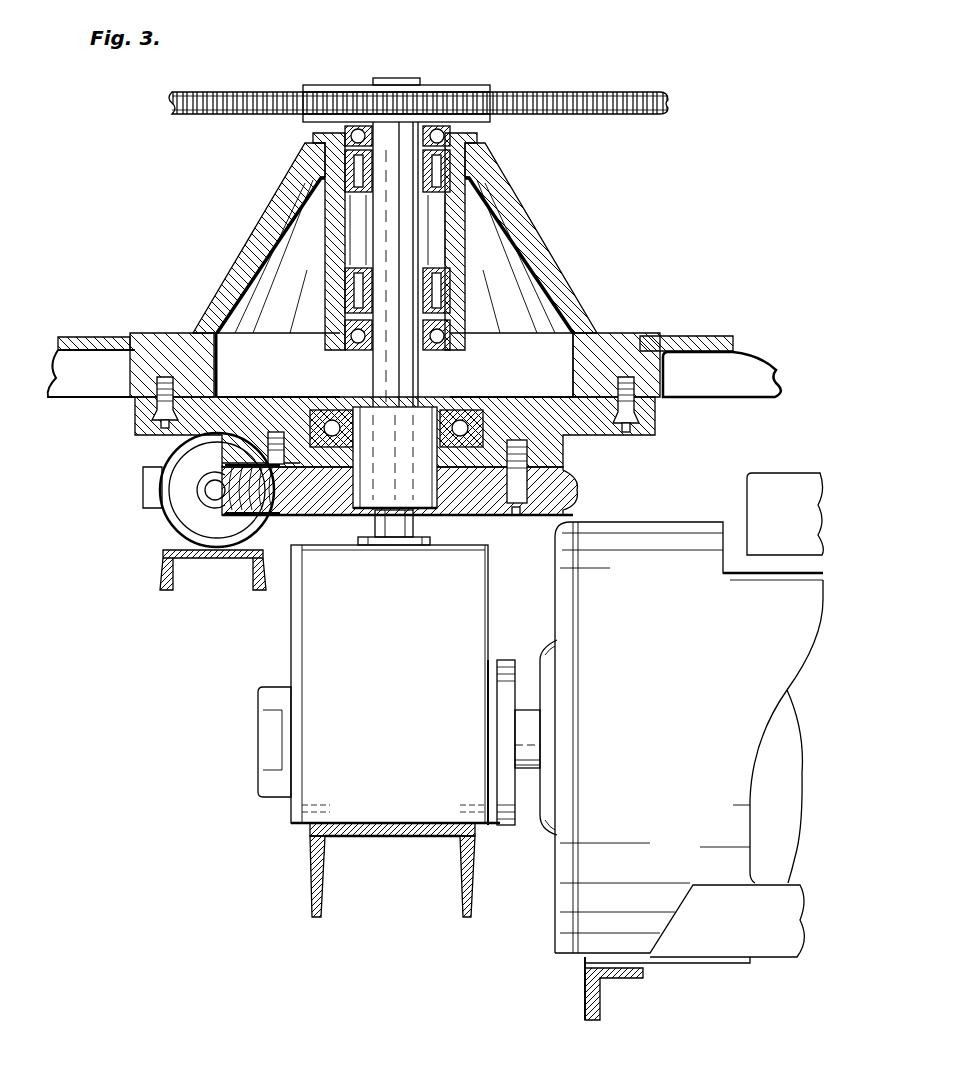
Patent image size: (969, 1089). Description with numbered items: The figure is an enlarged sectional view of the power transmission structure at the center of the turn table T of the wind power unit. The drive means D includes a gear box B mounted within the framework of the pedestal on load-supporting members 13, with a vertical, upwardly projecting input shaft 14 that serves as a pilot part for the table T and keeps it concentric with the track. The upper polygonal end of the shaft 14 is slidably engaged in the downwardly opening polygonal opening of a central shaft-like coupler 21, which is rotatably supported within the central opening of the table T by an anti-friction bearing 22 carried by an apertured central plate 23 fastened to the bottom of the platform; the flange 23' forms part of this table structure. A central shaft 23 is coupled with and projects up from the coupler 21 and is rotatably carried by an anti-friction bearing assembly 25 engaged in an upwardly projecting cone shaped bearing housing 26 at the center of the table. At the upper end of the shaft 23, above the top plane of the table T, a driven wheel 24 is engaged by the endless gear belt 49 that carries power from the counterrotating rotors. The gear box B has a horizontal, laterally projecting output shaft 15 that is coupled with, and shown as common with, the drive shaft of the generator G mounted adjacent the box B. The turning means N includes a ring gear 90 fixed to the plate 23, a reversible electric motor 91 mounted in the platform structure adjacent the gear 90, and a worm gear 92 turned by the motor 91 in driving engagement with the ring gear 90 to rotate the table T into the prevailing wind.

The load-supporting members 13 is at (312, 897).
The input shaft 14 is at (403, 540).
The output shaft 15 is at (538, 726).
The coupler 21 is at (390, 515).
The anti-friction bearing 22 is at (513, 393).
The central shaft 23 is at (486, 316).
The table flange 23' is at (722, 391).
The driven wheel 24 is at (462, 92).
The anti-friction bearing assembly 25 is at (452, 160).
The cone shaped bearing housing 26 is at (562, 255).
The gear belt 49 is at (657, 92).
The ring gear 90 is at (566, 494).
The reversible electric motor 91 is at (165, 490).
The worm gear 92 is at (208, 492).
The turn table T is at (113, 338).
The turning means N is at (165, 460).
The drive means D is at (292, 603).
The gear box B is at (418, 652).
The generator G is at (692, 527).